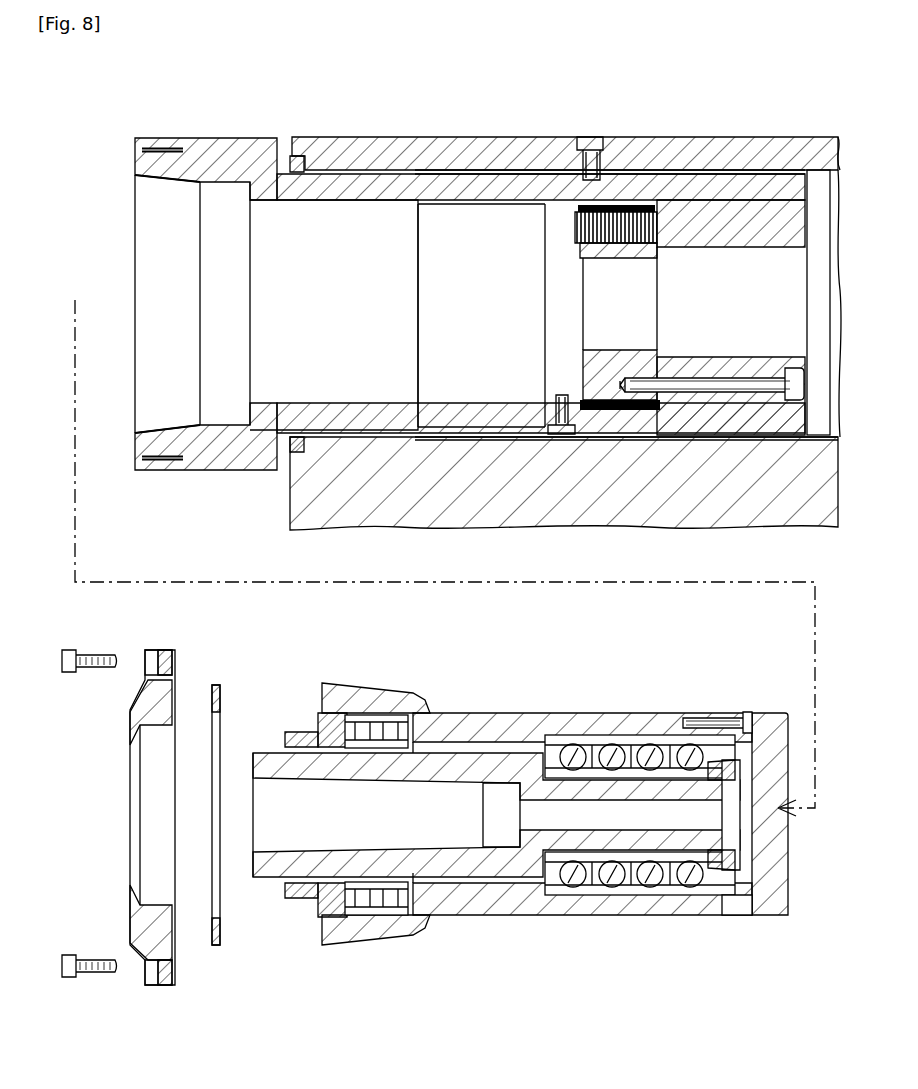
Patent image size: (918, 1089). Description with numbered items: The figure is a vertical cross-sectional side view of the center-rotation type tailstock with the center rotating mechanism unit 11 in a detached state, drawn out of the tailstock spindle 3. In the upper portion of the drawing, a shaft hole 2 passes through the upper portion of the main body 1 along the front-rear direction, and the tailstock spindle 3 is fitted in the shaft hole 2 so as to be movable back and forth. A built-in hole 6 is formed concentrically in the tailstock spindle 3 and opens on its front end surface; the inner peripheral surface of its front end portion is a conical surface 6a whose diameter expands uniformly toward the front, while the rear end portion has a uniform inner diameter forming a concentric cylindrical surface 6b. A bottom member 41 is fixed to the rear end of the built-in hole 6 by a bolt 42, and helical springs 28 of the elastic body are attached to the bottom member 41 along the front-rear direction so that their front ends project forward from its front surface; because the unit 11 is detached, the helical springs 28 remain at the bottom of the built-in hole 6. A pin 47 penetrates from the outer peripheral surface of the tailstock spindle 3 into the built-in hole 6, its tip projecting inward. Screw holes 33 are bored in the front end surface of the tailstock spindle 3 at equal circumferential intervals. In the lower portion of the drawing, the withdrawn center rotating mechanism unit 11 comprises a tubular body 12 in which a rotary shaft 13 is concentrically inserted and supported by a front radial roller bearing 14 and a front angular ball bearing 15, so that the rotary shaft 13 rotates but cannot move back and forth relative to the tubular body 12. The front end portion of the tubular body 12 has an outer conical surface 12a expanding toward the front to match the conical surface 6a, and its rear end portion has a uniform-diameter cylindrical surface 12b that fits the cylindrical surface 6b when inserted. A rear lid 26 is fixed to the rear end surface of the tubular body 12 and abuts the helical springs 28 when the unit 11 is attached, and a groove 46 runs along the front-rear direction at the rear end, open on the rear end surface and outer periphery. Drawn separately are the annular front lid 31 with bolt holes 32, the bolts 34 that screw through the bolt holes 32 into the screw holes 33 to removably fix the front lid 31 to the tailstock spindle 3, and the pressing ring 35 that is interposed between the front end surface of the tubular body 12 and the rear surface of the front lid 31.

The main body 1 is at (535, 160).
The shaft hole 2 is at (330, 180).
The tailstock spindle 3 is at (372, 192).
The built-in hole 6 is at (220, 215).
The conical surface 6a is at (160, 438).
The cylindrical surface 6b is at (455, 228).
The helical spring 28 is at (615, 247).
The screw hole 33 is at (140, 150).
The bottom member 41 is at (668, 385).
The bolt 42 is at (685, 386).
The pin 47 is at (560, 395).
The center rotating mechanism unit 11 is at (446, 680).
The tubular body 12 is at (487, 712).
The conical surface 12a is at (380, 684).
The cylindrical surface 12b is at (617, 712).
The rotary shaft 13 is at (533, 735).
The front radial roller bearing 14 is at (390, 893).
The front angular ball bearing 15 is at (605, 882).
The rear lid 26 is at (752, 856).
The groove 46 is at (745, 910).
The front lid 31 is at (130, 774).
The bolt hole 32 is at (170, 663).
The bolt 34 is at (80, 668).
The pressing ring 35 is at (216, 948).